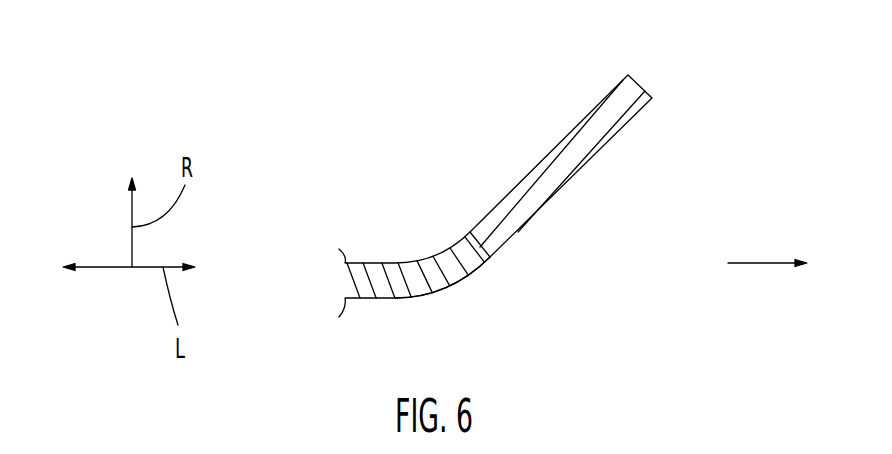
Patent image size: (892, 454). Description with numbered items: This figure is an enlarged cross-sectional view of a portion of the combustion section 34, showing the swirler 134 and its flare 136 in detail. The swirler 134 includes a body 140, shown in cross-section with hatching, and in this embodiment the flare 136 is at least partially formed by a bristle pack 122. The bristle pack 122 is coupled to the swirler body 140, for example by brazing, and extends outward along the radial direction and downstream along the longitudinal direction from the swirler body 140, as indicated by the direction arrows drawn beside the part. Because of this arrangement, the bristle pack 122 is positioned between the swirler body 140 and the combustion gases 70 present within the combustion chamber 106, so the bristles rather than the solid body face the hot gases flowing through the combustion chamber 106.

The airfoil 34 is at (303, 92).
The bristle pack 122 is at (572, 175).
The flare 136 is at (462, 188).
The swirler 134 is at (393, 333).
The swirler body 140 is at (442, 285).
The combustion chamber 106 is at (755, 170).
The combustion gases 70 is at (760, 263).